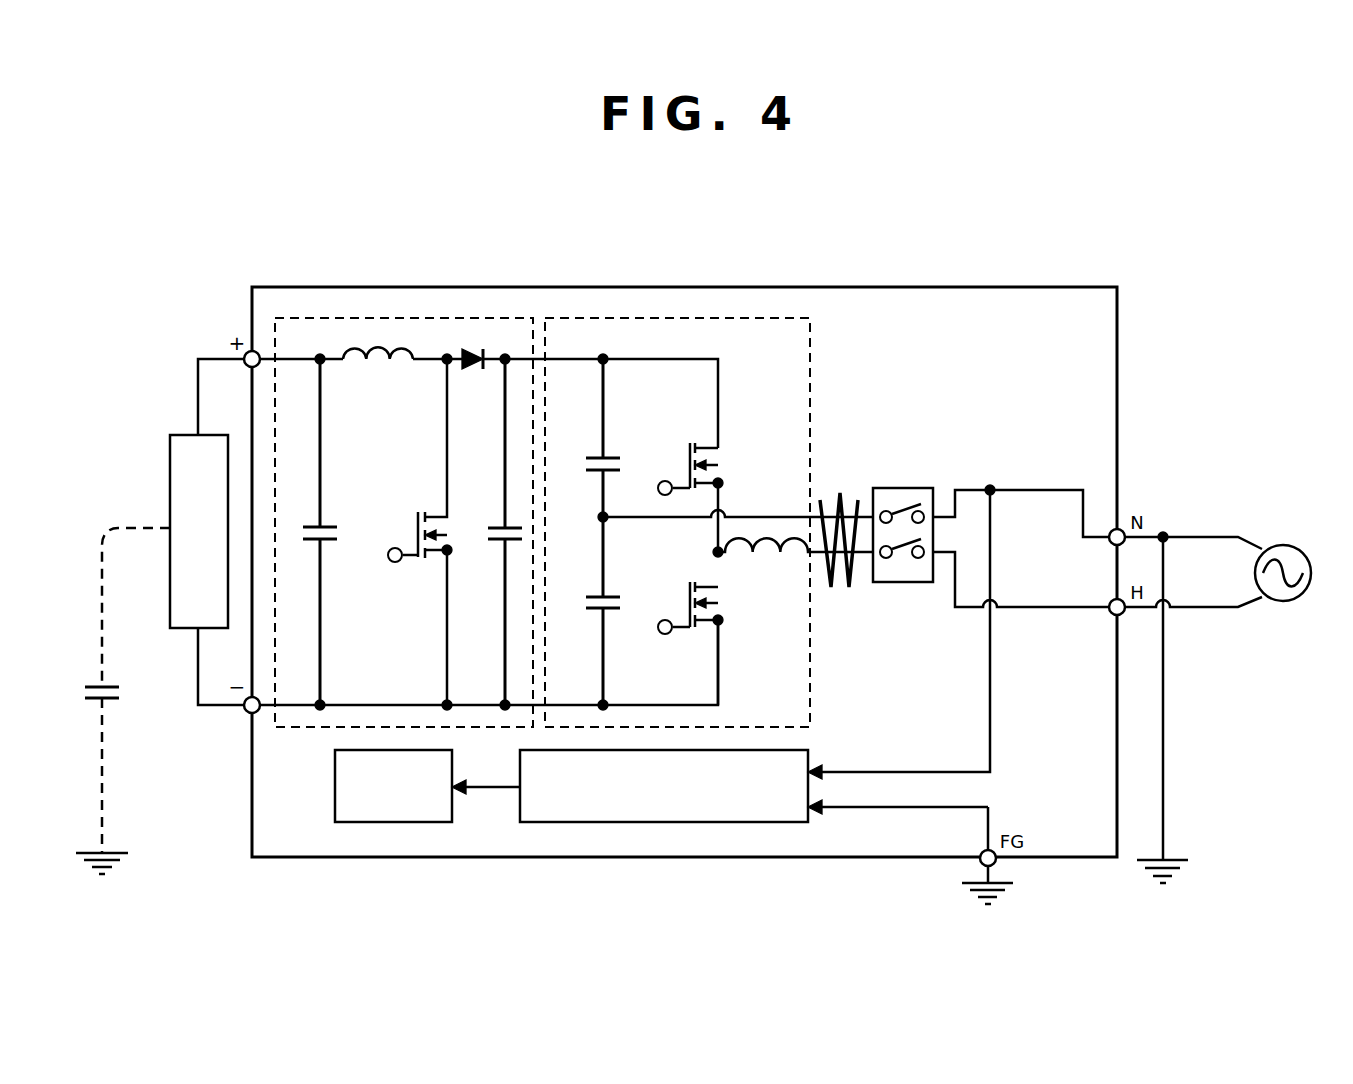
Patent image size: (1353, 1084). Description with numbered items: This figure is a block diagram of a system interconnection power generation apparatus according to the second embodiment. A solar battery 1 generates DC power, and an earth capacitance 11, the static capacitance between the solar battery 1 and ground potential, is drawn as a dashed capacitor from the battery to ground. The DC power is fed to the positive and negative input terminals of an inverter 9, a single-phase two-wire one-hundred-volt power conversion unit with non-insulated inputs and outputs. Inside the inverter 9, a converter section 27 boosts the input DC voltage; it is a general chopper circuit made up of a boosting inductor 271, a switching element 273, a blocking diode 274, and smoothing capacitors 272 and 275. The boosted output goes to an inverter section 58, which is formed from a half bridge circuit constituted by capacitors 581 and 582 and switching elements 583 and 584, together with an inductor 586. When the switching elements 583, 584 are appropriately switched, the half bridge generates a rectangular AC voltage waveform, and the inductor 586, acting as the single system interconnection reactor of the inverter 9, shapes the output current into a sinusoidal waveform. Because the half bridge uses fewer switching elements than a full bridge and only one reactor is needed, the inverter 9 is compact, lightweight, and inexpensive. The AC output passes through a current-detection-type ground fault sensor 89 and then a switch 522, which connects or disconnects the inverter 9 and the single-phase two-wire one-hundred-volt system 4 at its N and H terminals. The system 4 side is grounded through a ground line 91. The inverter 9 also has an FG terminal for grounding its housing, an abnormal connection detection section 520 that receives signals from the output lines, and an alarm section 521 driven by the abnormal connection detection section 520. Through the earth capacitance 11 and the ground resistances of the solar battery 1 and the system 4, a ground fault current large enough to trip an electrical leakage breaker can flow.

The solar battery 1 is at (186, 435).
The earth capacitance 11 is at (170, 508).
The inverter 9 is at (560, 287).
The converter section 27 is at (390, 318).
The boosting inductor 271 is at (380, 370).
The smoothing capacitor 272 is at (325, 526).
The switching element 273 is at (405, 562).
The blocking diode 274 is at (470, 370).
The smoothing capacitor 275 is at (500, 545).
The inverter section 58 is at (675, 318).
The capacitor 581 is at (602, 456).
The capacitor 582 is at (602, 596).
The switching element 583 is at (693, 443).
The switching element 584 is at (693, 582).
The inductor 586 is at (745, 560).
The ground fault sensor 89 is at (840, 493).
The switch 522 is at (903, 488).
The abnormal connection detection section 520 is at (655, 823).
The alarm section 521 is at (400, 823).
The single-phase two-wire 100-V system 4 is at (1287, 545).
The ground line 91 is at (1163, 815).